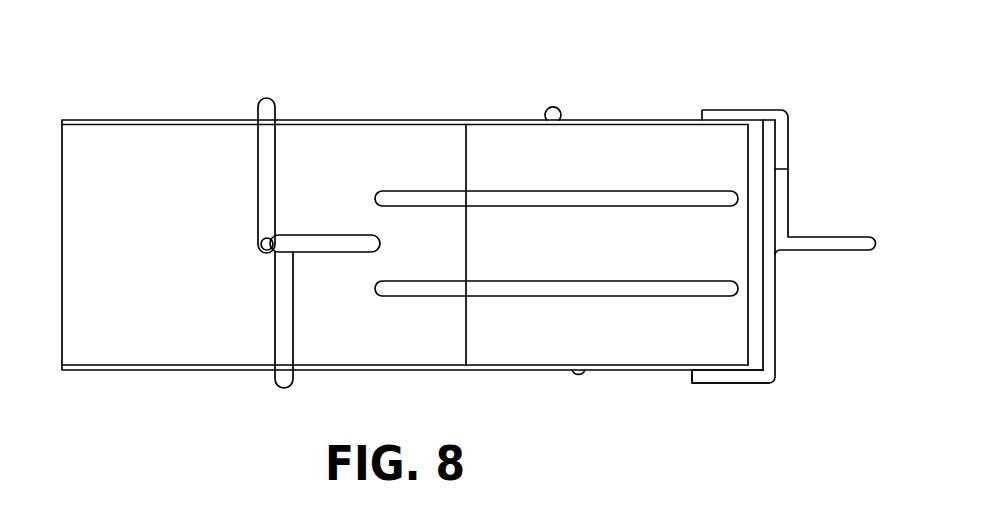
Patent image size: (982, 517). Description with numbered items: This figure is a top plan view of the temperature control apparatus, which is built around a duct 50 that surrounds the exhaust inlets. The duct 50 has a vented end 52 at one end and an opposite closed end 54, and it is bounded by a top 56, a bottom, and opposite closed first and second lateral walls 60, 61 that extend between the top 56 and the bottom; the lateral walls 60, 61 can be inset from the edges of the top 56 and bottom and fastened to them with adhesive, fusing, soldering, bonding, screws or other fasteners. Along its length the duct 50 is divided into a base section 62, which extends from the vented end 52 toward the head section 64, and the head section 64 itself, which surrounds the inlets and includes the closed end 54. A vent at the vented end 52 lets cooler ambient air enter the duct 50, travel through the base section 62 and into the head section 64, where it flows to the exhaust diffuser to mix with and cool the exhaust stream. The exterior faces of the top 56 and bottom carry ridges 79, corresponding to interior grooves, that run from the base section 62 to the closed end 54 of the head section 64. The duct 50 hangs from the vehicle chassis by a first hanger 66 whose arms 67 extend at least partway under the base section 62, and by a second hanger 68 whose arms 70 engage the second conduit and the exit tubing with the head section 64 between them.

The duct 50 is at (617, 133).
The vented end 52 is at (62, 153).
The closed end 54 is at (750, 272).
The top 56 is at (395, 143).
The first lateral wall 60 is at (508, 130).
The second lateral wall 61 is at (500, 370).
The base section 62 is at (150, 307).
The head section 64 is at (667, 330).
The first hanger 66 is at (258, 128).
The arms 67 is at (273, 378).
The second hanger 68 is at (788, 158).
The arms 70 is at (725, 375).
The ridges 79 is at (683, 197).